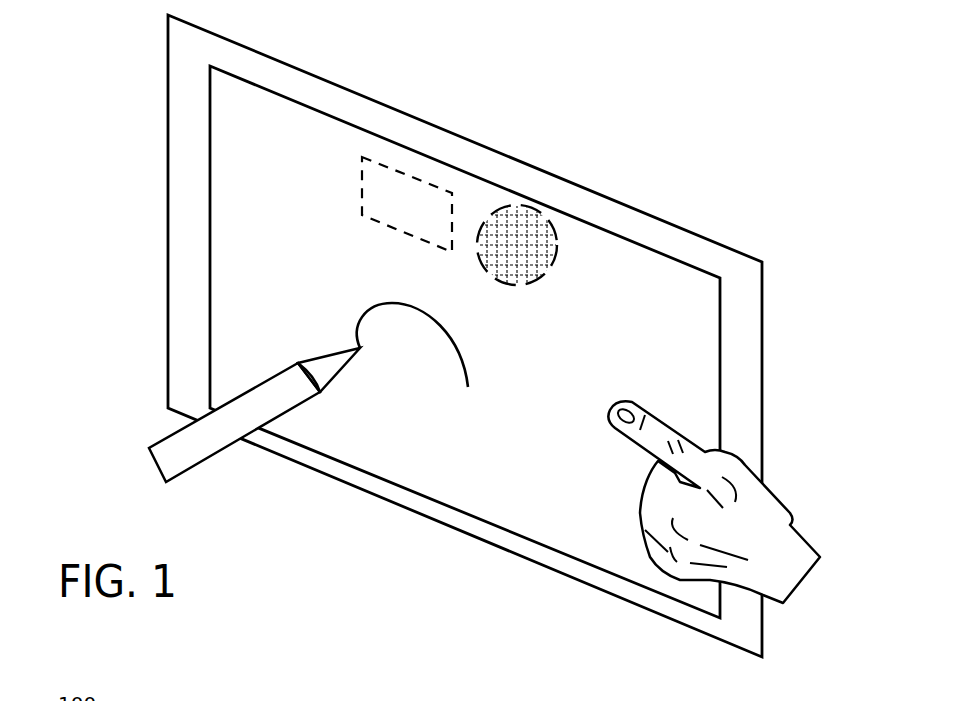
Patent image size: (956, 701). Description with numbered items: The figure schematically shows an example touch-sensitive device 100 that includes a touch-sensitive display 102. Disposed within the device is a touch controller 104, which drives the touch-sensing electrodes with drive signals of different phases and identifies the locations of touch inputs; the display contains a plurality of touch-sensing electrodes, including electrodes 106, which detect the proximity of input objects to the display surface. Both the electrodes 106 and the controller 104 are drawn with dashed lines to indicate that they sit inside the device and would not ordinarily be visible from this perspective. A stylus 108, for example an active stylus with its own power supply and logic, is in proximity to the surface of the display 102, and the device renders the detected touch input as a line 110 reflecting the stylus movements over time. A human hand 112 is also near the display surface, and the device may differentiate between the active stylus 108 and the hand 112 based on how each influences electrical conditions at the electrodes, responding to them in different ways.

The touch-sensitive device 100 is at (533, 88).
The touch-sensitive display 102 is at (210, 150).
The touch controller 104 is at (423, 214).
The touch-sensing electrodes 106 is at (540, 217).
The stylus 108 is at (151, 447).
The line 110 is at (360, 313).
The human hand 112 is at (795, 532).